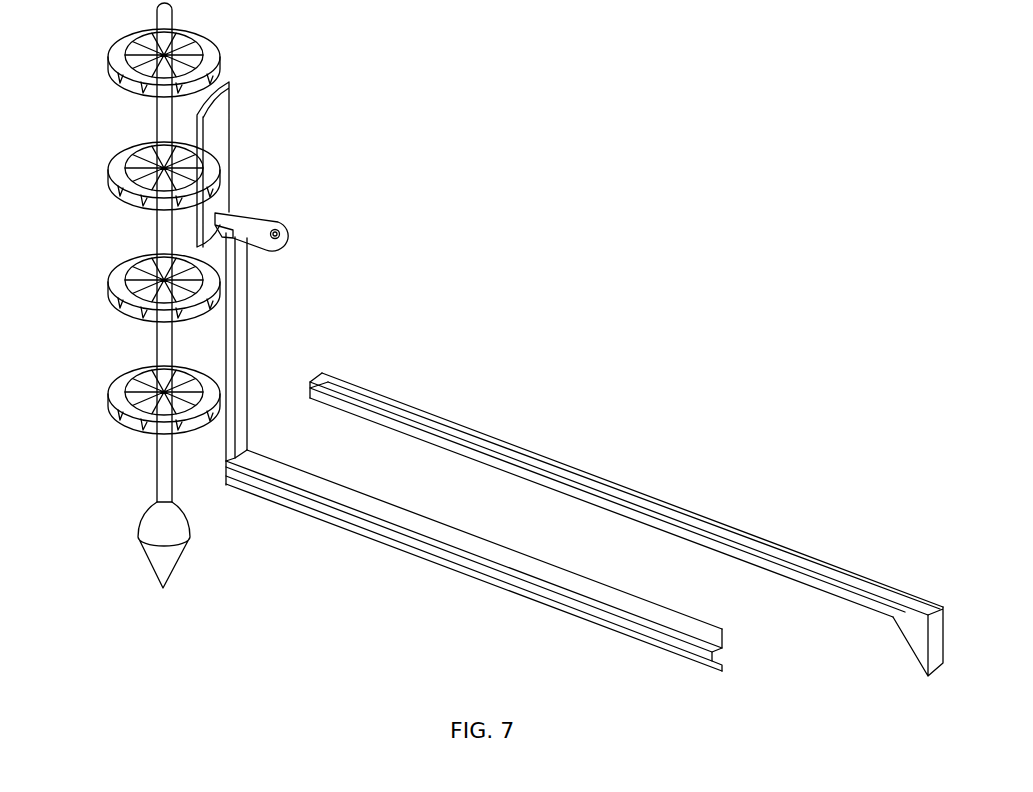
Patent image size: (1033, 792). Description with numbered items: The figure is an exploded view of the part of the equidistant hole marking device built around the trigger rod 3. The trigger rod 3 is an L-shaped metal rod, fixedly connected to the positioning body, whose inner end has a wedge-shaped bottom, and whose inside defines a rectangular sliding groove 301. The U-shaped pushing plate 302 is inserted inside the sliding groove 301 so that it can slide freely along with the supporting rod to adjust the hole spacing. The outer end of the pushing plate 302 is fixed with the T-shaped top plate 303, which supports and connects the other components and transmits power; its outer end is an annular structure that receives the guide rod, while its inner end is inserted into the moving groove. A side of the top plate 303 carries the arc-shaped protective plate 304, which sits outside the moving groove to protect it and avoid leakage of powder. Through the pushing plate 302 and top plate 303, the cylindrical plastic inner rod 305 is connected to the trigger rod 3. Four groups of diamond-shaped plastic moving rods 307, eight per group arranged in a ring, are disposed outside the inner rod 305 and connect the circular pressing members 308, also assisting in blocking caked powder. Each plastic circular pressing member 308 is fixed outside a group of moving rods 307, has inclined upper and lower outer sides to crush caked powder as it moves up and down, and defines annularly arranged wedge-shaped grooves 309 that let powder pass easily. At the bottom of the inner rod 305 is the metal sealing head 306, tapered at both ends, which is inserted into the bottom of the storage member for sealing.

The trigger rod 3 is at (870, 595).
The sliding groove 301 is at (767, 547).
The pushing plate 302 is at (582, 615).
The top plate 303 is at (237, 295).
The protective plate 304 is at (217, 167).
The inner rod 305 is at (157, 232).
The sealing head 306 is at (162, 525).
The moving rods 307 is at (113, 393).
The circular pressing members 308 is at (130, 428).
The wedge-shaped grooves 309 is at (116, 170).